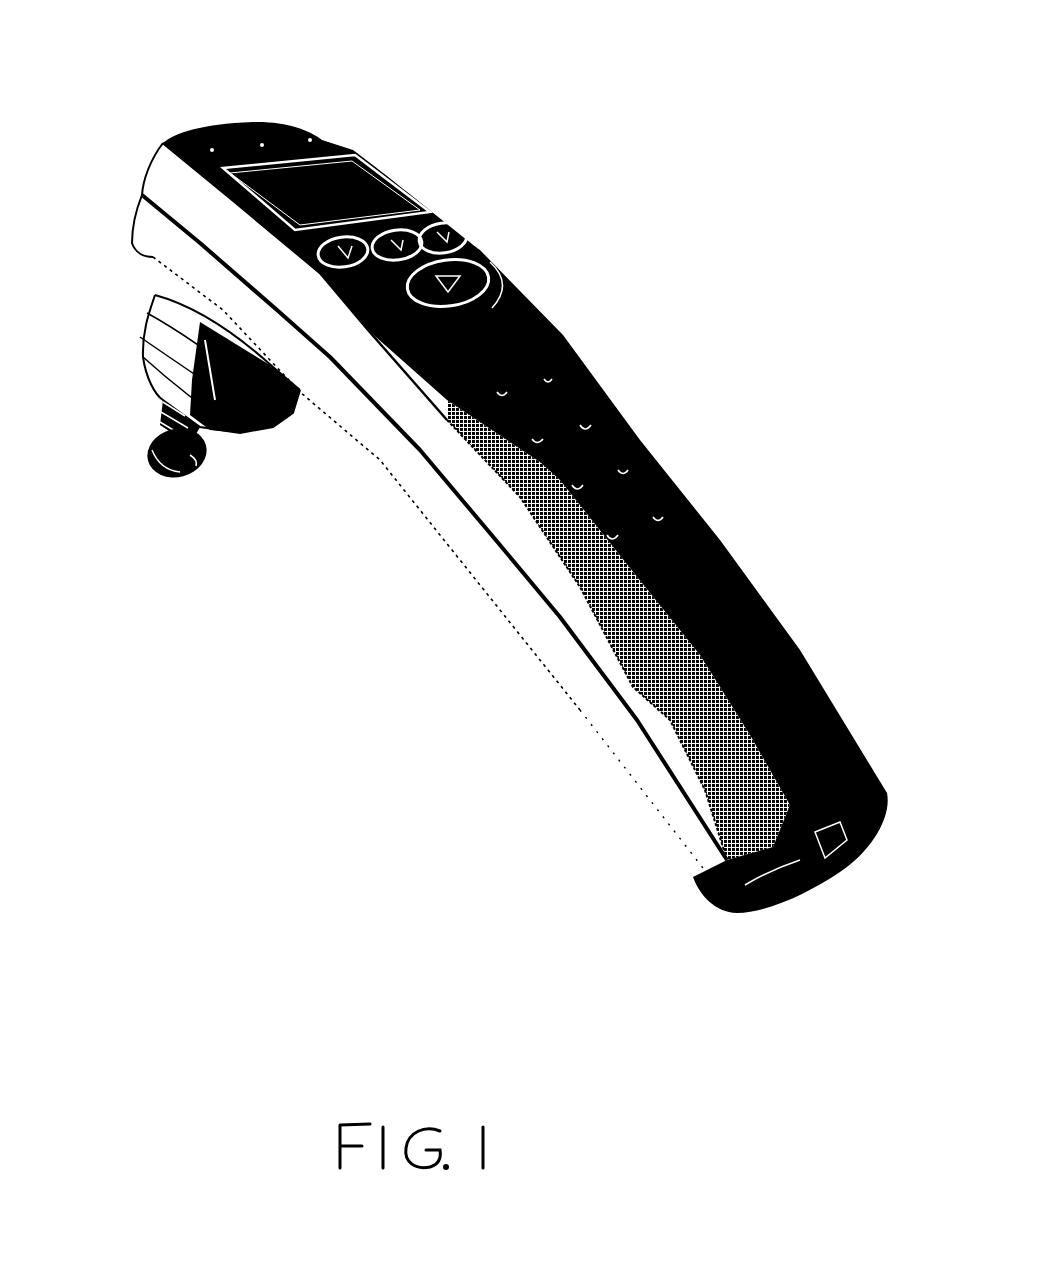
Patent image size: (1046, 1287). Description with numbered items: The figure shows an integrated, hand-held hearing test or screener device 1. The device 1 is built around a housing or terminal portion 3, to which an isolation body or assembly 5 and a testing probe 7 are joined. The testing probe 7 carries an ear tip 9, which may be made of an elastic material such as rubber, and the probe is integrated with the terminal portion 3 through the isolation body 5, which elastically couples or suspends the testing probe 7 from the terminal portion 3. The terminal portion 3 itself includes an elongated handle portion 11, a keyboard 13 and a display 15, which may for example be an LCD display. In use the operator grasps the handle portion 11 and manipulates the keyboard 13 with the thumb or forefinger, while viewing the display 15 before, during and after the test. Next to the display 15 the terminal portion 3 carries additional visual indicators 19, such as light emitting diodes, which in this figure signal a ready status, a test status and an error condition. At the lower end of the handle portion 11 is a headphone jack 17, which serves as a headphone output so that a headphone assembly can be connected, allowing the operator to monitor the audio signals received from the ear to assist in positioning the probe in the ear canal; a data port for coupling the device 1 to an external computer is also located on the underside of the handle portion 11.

The hand-held hearing test device 1 is at (467, 472).
The terminal portion 3 is at (375, 162).
The isolation body 5 is at (248, 433).
The testing probe 7 is at (157, 417).
The ear tip 9 is at (168, 480).
The handle portion 11 is at (670, 460).
The keyboard 13 is at (463, 255).
The display 15 is at (368, 188).
The headphone jack 17 is at (813, 847).
The visual indicators 19 is at (195, 132).